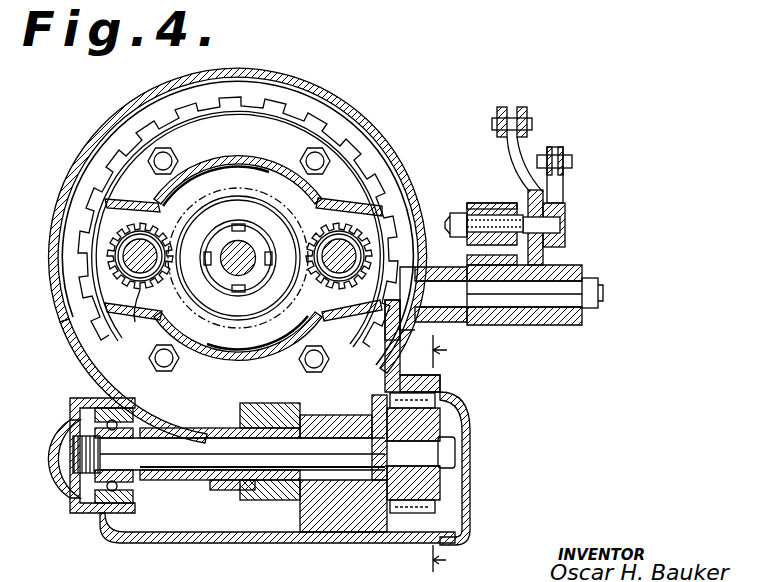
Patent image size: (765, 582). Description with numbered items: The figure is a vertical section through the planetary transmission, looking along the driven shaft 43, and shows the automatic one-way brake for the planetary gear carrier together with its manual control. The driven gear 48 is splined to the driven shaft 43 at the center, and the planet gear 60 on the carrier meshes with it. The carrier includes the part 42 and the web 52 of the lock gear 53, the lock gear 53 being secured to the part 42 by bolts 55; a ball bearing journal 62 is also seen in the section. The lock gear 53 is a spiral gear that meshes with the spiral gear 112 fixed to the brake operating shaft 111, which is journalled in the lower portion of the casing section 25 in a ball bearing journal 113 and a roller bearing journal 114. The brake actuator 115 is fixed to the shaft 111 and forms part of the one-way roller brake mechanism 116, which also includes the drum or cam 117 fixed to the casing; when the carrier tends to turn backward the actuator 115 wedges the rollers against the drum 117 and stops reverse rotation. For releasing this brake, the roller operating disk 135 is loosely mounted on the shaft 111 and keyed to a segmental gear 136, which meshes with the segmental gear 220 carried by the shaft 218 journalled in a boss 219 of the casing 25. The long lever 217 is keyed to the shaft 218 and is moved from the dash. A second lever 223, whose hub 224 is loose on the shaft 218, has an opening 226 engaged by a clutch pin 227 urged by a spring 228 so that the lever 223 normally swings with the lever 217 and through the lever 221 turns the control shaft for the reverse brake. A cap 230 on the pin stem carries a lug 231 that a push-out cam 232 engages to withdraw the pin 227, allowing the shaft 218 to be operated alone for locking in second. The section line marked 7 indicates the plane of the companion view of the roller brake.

The casing section 25 is at (335, 100).
The lock gear 53 is at (355, 152).
The bolts 55 is at (170, 360).
The web 52 is at (243, 190).
The part 42 is at (212, 180).
The driven gear 48 is at (194, 230).
The driven shaft 43 is at (232, 246).
The planet gear 60 is at (115, 276).
The ball bearing journal 62 is at (134, 314).
The ball bearing journal 113 is at (100, 482).
The roller operating disk 135 is at (385, 510).
The segmental gear 136 is at (375, 396).
The brake operating shaft 111 is at (157, 462).
The spiral gear 112 is at (238, 500).
The roller bearing journal 114 is at (295, 488).
The automatic one-way roller brake mechanism 116 is at (430, 444).
The brake actuator 115 is at (465, 410).
The drum or cam 117 is at (445, 385).
The segmental gear 220 is at (415, 340).
The section line 7 is at (447, 453).
The boss 219 is at (436, 274).
The push-out cam 232 is at (520, 287).
The hub 224 is at (570, 272).
The shaft 218 is at (535, 320).
The lever 223 is at (560, 205).
The opening 226 is at (568, 213).
The clutch pin 227 is at (560, 233).
The long lever 217 is at (520, 158).
The spring 228 is at (497, 222).
The lever 221 is at (468, 210).
The cap 230 is at (476, 203).
The lug 231 is at (515, 252).